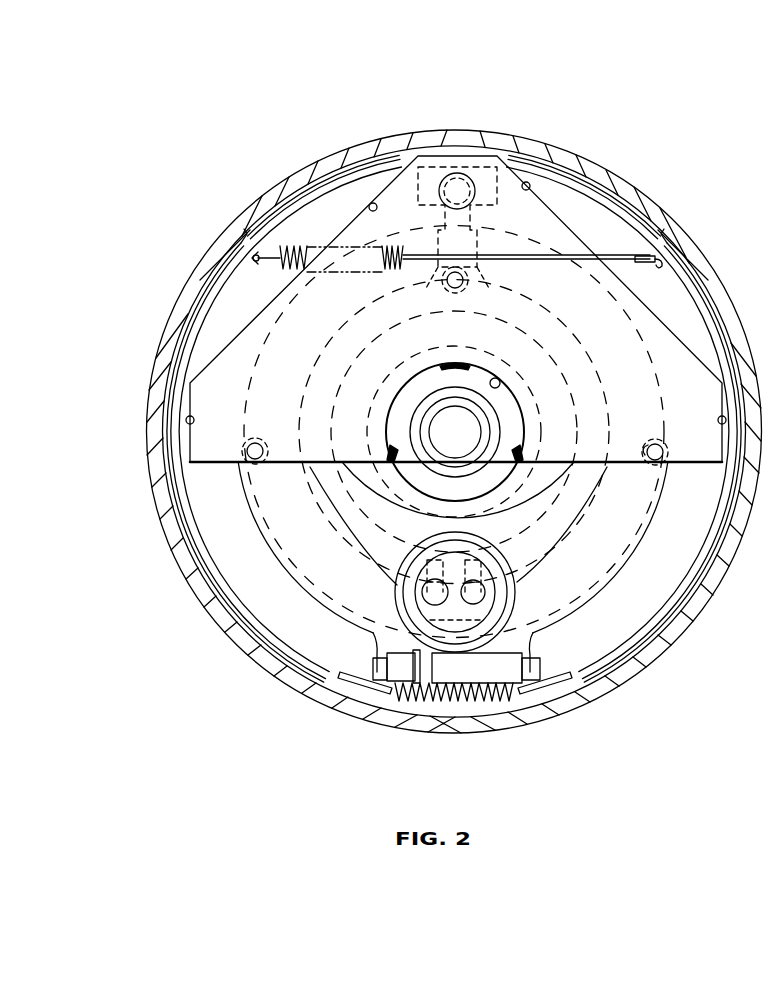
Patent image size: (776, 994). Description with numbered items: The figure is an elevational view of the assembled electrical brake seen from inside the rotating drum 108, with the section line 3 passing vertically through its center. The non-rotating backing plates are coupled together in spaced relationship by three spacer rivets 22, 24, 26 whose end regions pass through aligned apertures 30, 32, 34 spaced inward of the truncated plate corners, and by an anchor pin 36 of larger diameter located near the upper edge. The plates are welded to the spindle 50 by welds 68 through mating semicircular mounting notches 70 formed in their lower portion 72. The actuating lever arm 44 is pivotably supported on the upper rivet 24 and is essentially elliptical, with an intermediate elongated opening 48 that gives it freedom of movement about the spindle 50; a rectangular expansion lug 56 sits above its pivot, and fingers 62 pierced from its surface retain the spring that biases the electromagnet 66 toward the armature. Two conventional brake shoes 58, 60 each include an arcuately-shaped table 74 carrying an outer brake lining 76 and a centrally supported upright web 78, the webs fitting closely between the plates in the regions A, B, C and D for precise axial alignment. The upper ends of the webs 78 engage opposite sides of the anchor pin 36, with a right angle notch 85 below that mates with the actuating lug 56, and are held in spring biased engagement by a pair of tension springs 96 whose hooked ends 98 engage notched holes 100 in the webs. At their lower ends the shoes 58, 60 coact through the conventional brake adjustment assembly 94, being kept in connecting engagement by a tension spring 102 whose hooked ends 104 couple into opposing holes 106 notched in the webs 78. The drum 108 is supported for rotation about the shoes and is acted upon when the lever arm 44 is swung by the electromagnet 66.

The section line 3- 3 is at (457, 118).
The spacer rivet 22 is at (664, 450).
The upper spacer rivet 24 is at (440, 283).
The spacer rivet 26 is at (250, 440).
The aperture 30 is at (646, 450).
The aperture 32 is at (462, 288).
The aperture 34 is at (262, 450).
The anchor pin 36 is at (440, 195).
The actuating lever arm 44 is at (560, 525).
The elongated opening 48 is at (378, 500).
The spindle 50 is at (468, 498).
The expansion lug 56 is at (478, 245).
The brake shoe 58 is at (672, 572).
The brake shoe 60 is at (230, 582).
The fingers 62 is at (470, 600).
The electromagnet 66 is at (507, 622).
The welds 68 is at (440, 365).
The mounting notches 70 is at (500, 383).
The lower portion 72 is at (555, 462).
The table 74 is at (333, 190).
The brake lining 76 is at (194, 318).
The web 78 is at (306, 605).
The right angle notch 85 is at (445, 208).
The brake adjustment assembly 94 is at (474, 677).
The tension springs 96 is at (400, 248).
The hooked ends 98 is at (644, 256).
The notched holes 100 is at (258, 265).
The tension spring 102 is at (478, 705).
The hooked ends 104 is at (555, 670).
The holes 106 is at (348, 670).
The drum 108 is at (698, 603).
The region A is at (194, 418).
The region B is at (376, 204).
The region C is at (522, 186).
The region D is at (718, 418).